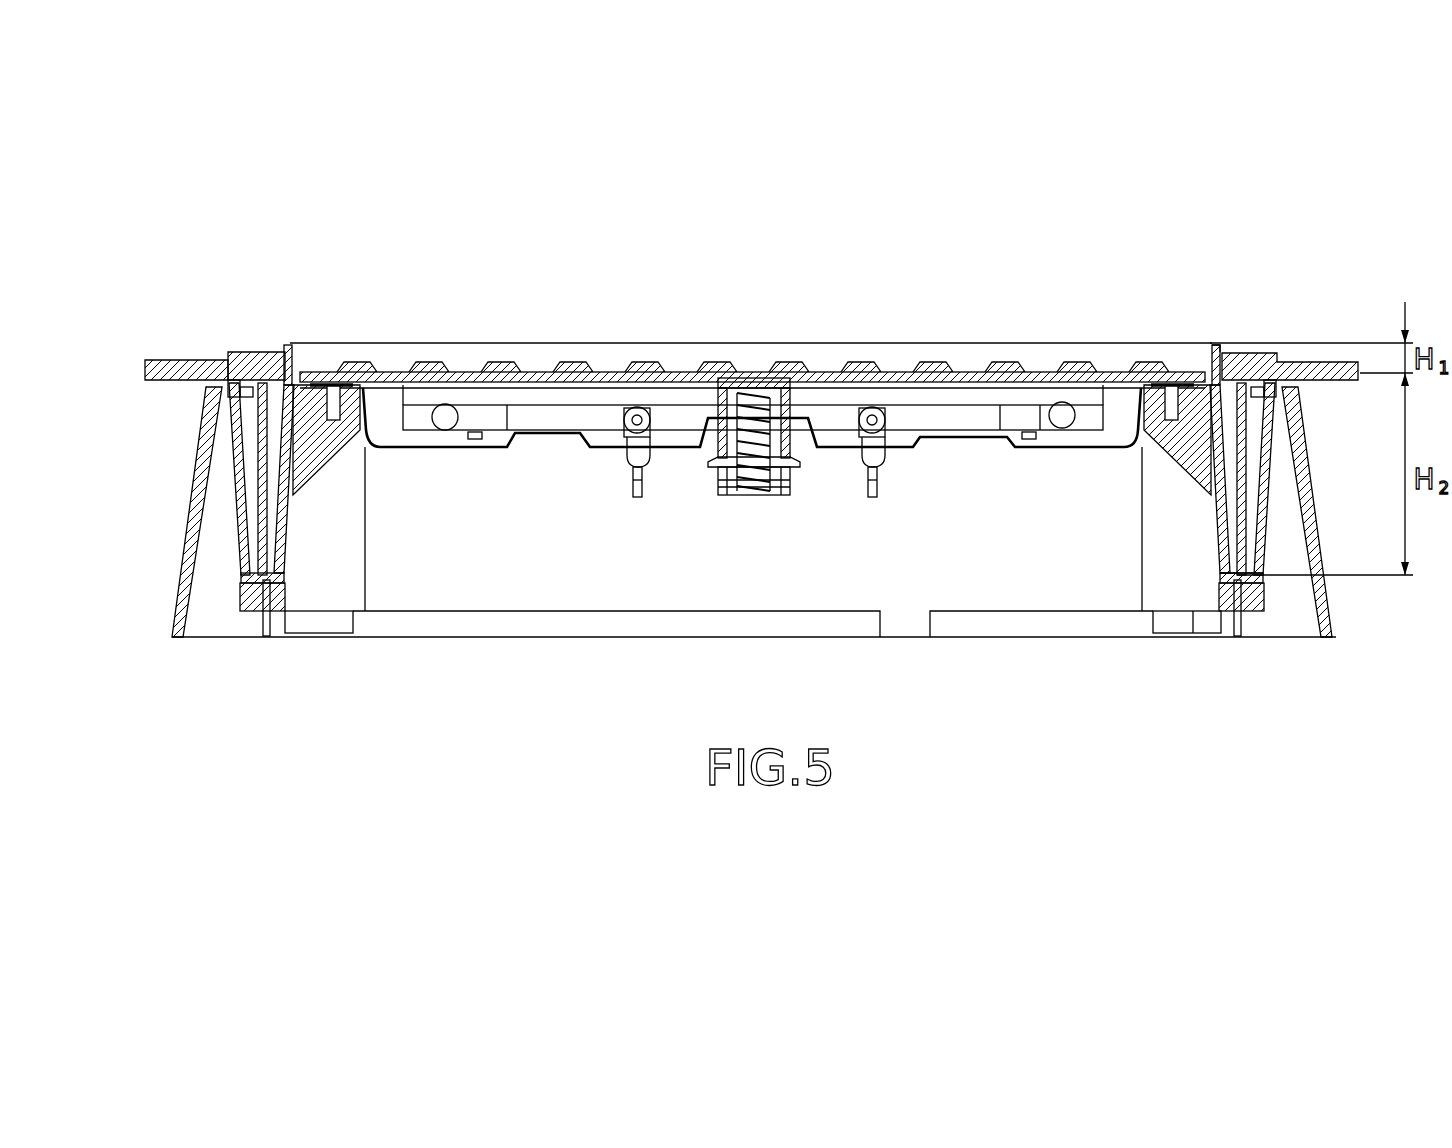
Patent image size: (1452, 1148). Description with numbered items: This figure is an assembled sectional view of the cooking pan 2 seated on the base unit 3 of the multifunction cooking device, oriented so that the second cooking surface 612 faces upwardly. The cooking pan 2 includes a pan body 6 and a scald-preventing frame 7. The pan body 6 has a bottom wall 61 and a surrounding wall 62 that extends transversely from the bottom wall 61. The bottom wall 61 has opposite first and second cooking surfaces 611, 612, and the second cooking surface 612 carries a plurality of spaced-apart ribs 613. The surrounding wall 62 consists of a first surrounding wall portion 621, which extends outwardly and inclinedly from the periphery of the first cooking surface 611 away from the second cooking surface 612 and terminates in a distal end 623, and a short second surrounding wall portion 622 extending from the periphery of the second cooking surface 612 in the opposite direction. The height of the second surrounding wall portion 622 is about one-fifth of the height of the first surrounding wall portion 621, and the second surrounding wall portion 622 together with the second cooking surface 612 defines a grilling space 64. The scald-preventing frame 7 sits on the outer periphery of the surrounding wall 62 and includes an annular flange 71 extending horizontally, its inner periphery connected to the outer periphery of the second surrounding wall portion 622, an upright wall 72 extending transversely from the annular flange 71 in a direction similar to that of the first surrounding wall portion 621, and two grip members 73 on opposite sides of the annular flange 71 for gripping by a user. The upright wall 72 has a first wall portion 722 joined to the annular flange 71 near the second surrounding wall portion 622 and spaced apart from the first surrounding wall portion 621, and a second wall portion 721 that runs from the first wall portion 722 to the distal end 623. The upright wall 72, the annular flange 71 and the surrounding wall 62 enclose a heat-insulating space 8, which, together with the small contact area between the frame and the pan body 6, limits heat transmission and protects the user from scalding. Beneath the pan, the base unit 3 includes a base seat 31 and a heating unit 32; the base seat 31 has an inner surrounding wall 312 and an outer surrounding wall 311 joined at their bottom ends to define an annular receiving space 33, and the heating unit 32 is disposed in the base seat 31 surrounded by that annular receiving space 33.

The cooking pan 2 is at (752, 327).
The base unit 3 is at (777, 558).
The pan body 6 is at (752, 483).
The scald-preventing frame 7 is at (746, 468).
The heat-insulating space 8 is at (275, 422).
The base seat 31 is at (1270, 527).
The heating unit 32 is at (586, 457).
The annular receiving space 33 is at (1258, 478).
The bottom wall 61 is at (935, 363).
The surrounding wall 62 is at (1205, 458).
The grilling space 64 is at (1106, 350).
The annular flange 71 is at (263, 367).
The upright wall 72 is at (260, 471).
The grip member 73 is at (178, 370).
The outer surrounding wall 311 is at (243, 568).
The inner surrounding wall 312 is at (292, 537).
The first cooking surface 611 is at (823, 380).
The second cooking surface 612 is at (1040, 372).
The rib 613 is at (573, 367).
The first surrounding wall portion 621 is at (1225, 523).
The second surrounding wall portion 622 is at (1215, 350).
The distal end 623 is at (266, 600).
The second wall portion 721 is at (262, 537).
The first wall portion 722 is at (262, 393).